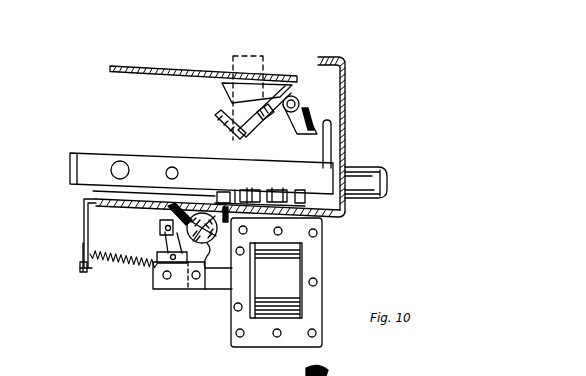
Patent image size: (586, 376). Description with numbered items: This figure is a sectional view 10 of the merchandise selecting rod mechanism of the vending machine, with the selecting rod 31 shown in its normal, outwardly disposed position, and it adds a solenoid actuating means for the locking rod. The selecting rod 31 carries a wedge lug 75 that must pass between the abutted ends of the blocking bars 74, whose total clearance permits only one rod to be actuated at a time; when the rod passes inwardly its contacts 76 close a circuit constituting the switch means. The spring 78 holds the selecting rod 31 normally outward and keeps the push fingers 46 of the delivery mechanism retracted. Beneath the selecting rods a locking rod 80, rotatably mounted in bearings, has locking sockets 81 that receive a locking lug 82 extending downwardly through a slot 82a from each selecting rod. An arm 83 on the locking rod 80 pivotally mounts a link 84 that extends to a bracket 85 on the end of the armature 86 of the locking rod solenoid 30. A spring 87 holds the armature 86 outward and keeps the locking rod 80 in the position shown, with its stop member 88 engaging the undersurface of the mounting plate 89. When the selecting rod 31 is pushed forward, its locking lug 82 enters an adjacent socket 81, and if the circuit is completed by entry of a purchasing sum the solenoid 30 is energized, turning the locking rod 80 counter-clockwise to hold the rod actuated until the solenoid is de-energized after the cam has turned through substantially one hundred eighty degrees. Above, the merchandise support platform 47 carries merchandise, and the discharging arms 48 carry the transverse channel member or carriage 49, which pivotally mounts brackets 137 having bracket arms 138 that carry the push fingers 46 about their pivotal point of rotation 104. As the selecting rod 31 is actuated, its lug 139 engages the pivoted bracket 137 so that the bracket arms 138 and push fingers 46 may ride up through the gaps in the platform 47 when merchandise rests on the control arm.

The sectional view 10 is at (228, 0).
The locking rod solenoid 30 is at (322, 241).
The selecting rod 31 is at (387, 183).
The push fingers 46 is at (222, 86).
The merchandise support platform 47 is at (130, 66).
The merchandise discharging arms 48 is at (233, 57).
The transverse channel member or carriage 49 is at (215, 118).
The blocking bars 74 is at (257, 194).
The wedge lug 75 is at (297, 194).
The contacts 76 is at (120, 161).
The spring 78 is at (296, 97).
The locking rod 80 is at (200, 289).
The locking sockets 81 is at (203, 213).
The locking lug 82 is at (216, 255).
The slot 82a is at (225, 206).
The arm 83 is at (160, 227).
The link 84 is at (166, 244).
The bracket 85 is at (158, 265).
The armature 86 is at (178, 282).
The spring 87 is at (100, 262).
The stop member 88 is at (166, 200).
The mounting plate 89 is at (88, 208).
The pivotal point of rotation 104 is at (303, 106).
The brackets 137 is at (318, 112).
The bracket arms 138 is at (251, 97).
The lug 139 is at (345, 141).